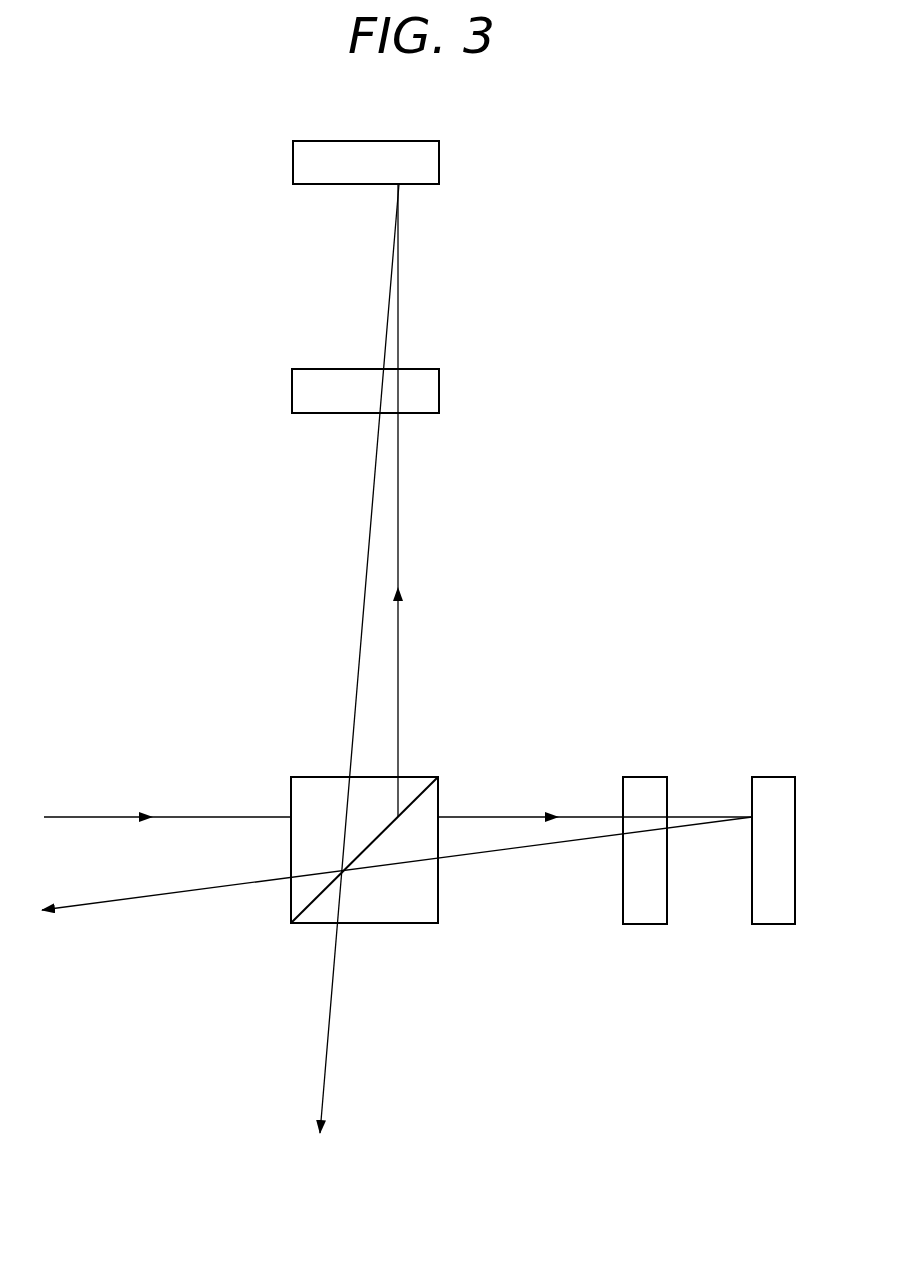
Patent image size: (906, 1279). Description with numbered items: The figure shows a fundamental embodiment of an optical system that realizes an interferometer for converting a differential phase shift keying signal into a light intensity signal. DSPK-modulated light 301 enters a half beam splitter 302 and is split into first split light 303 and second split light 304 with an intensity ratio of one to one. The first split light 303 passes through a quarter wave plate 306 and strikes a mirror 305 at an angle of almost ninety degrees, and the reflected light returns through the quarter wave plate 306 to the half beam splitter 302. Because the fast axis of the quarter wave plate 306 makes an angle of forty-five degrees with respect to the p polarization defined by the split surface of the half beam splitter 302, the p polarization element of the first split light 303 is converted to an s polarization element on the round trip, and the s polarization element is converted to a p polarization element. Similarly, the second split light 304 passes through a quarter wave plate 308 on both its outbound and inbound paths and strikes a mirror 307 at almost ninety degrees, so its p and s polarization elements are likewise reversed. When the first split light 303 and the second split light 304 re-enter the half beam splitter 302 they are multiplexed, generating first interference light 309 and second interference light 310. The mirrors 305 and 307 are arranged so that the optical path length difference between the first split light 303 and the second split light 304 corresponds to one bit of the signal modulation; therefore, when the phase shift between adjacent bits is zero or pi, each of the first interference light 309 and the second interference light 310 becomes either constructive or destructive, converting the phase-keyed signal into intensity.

The DSPK-modulated light 301 is at (104, 815).
The half beam splitter 302 is at (317, 785).
The first split light 303 is at (400, 497).
The second split light 304 is at (512, 815).
The mirror 305 is at (432, 163).
The quarter wave plate 306 is at (430, 392).
The mirror 307 is at (775, 785).
The quarter wave plate 308 is at (644, 785).
The first interference light 309 is at (95, 903).
The second interference light 310 is at (327, 1077).